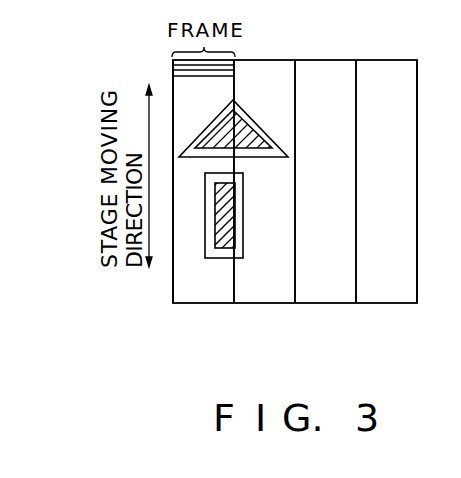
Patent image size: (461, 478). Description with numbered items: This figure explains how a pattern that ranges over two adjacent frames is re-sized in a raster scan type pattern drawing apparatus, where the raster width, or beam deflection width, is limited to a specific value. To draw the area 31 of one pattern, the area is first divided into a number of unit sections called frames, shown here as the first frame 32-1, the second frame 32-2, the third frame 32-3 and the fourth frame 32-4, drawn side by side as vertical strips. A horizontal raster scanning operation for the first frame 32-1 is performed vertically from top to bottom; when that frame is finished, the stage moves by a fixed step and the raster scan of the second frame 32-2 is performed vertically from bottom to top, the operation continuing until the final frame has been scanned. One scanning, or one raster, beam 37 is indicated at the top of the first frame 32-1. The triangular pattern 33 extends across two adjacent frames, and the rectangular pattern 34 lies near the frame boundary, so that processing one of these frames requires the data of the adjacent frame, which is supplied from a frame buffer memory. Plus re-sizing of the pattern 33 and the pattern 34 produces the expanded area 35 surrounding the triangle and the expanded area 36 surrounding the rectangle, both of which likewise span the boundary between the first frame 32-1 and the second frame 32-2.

The area of one pattern 31 is at (383, 60).
The first frame 32-1 is at (192, 303).
The second frame 32-2 is at (261, 303).
The third frame 32-3 is at (330, 303).
The fourth frame 32-4 is at (393, 303).
The pattern extending two adjacent frames 33 is at (246, 113).
The pattern located near the frame boundary 34 is at (225, 249).
The expanded area 35 is at (275, 142).
The expanded area 36 is at (243, 207).
The scanning beam 37 is at (173, 61).